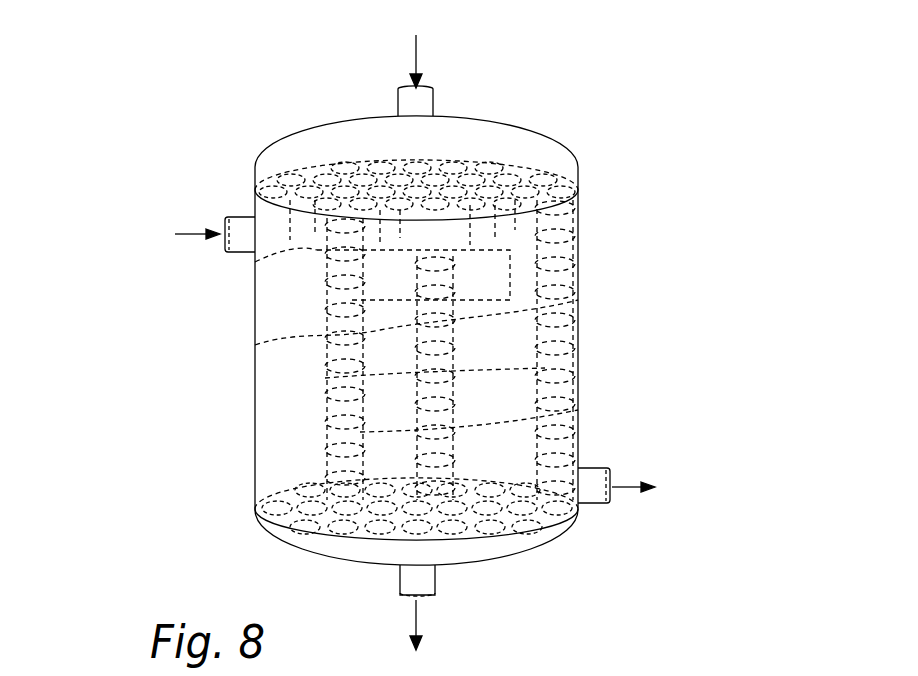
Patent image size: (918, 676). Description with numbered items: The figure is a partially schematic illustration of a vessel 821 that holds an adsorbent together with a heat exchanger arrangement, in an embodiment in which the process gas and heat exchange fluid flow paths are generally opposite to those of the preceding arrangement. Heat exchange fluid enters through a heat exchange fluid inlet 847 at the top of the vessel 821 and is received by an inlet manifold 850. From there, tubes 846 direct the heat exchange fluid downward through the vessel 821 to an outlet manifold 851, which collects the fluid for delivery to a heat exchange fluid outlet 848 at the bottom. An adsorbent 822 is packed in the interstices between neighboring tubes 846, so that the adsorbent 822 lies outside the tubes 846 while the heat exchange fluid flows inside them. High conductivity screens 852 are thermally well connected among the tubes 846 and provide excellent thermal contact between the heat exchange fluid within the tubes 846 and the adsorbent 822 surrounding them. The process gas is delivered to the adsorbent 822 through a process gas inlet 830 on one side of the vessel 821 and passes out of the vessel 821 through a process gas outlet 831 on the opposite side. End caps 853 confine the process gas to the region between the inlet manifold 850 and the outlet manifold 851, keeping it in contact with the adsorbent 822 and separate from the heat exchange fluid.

The vessel 821 is at (255, 438).
The adsorbent 822 is at (578, 167).
The process gas inlet 830 is at (227, 217).
The process gas outlet 831 is at (600, 468).
The tubes 846 is at (578, 338).
The heat exchange fluid inlet 847 is at (400, 100).
The heat exchange fluid outlet 848 is at (403, 585).
The inlet manifold 850 is at (555, 140).
The outlet manifold 851 is at (320, 546).
The high conductivity screens 852 is at (255, 345).
The end caps 853 is at (312, 212).